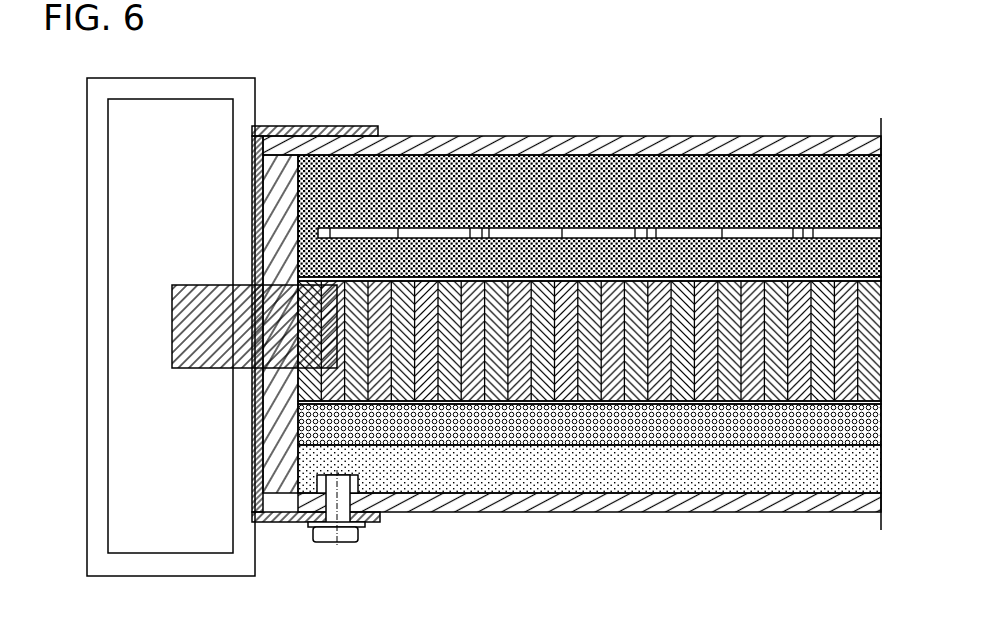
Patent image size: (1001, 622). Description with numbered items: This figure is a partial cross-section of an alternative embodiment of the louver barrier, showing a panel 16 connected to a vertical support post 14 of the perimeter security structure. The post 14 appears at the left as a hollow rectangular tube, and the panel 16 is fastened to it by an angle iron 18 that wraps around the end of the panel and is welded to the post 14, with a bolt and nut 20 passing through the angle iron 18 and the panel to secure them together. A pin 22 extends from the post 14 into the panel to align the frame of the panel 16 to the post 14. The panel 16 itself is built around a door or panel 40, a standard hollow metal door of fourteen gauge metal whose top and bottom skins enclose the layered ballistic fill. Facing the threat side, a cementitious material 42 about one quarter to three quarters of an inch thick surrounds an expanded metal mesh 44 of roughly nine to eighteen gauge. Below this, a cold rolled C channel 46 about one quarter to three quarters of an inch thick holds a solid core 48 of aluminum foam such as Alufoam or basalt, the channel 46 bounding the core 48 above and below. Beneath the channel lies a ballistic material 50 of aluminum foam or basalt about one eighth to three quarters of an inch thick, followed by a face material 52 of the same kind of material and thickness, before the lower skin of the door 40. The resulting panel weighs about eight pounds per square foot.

The vertical support post 14 is at (100, 135).
The panel 16 is at (787, 68).
The angle iron 18 is at (277, 126).
The bolt and nut 20 is at (335, 530).
The pin 22 is at (206, 283).
The door or panel 40 is at (484, 148).
The cementitious material 42 is at (645, 185).
The expanded metal mesh 44 is at (852, 233).
The cold rolled C channel 46 is at (860, 277).
The solid core 48 is at (852, 326).
The ballistic material 50 is at (858, 424).
The face material 52 is at (798, 468).